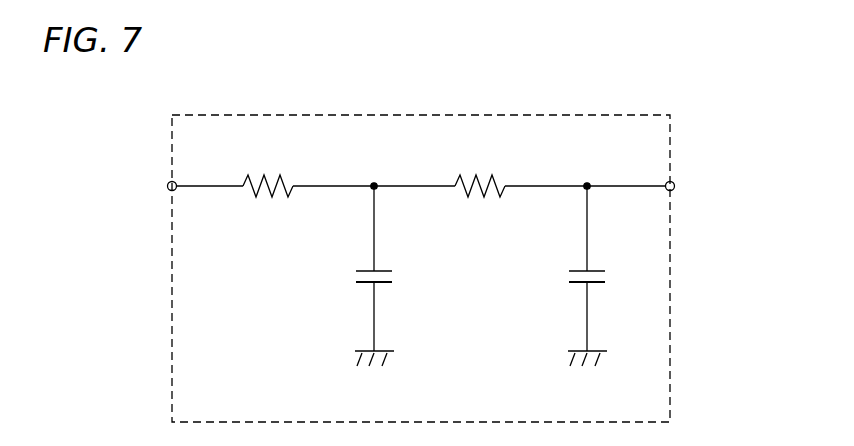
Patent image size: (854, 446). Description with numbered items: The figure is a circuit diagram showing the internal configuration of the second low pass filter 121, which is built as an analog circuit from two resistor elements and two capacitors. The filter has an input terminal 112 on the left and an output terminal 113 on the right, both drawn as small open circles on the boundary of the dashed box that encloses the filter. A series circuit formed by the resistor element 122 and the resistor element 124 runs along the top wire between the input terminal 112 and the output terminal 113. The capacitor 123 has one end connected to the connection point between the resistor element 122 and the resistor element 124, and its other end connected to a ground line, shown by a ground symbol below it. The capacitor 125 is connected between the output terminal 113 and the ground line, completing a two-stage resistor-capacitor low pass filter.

The second low pass filter 121 is at (442, 115).
The input terminal 112 is at (168, 183).
The output terminal 113 is at (674, 183).
The resistor element 122 is at (284, 178).
The capacitor 123 is at (363, 283).
The resistor element 124 is at (497, 178).
The capacitor 125 is at (576, 283).